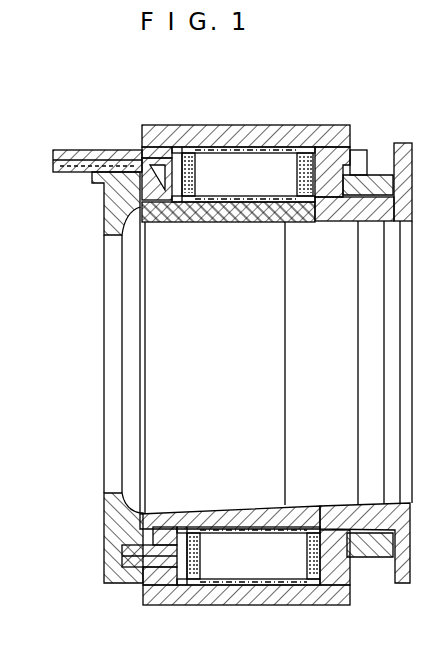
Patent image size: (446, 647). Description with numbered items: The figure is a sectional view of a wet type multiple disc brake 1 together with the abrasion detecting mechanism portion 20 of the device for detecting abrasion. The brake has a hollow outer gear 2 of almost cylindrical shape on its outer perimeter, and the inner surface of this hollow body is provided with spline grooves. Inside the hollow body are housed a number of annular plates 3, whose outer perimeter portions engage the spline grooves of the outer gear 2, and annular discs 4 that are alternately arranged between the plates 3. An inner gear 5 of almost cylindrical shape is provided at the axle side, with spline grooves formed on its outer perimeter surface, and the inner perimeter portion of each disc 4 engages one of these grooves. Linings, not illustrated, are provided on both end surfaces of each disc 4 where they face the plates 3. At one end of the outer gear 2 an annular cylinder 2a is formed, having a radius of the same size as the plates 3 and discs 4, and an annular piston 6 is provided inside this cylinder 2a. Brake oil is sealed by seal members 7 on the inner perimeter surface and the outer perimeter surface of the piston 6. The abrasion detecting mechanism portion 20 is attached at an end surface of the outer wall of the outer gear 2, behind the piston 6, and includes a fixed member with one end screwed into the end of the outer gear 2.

The wet type multiple disc brake 1 is at (279, 121).
The outer gear 2 is at (167, 124).
The annular cylinder 2a is at (128, 150).
The annular plates 3 is at (206, 158).
The annular discs 4 is at (182, 222).
The inner gear 5 is at (325, 221).
The annular piston 6 is at (105, 208).
The seal members 7 is at (150, 222).
The abrasion detecting mechanism portion 20 is at (73, 138).